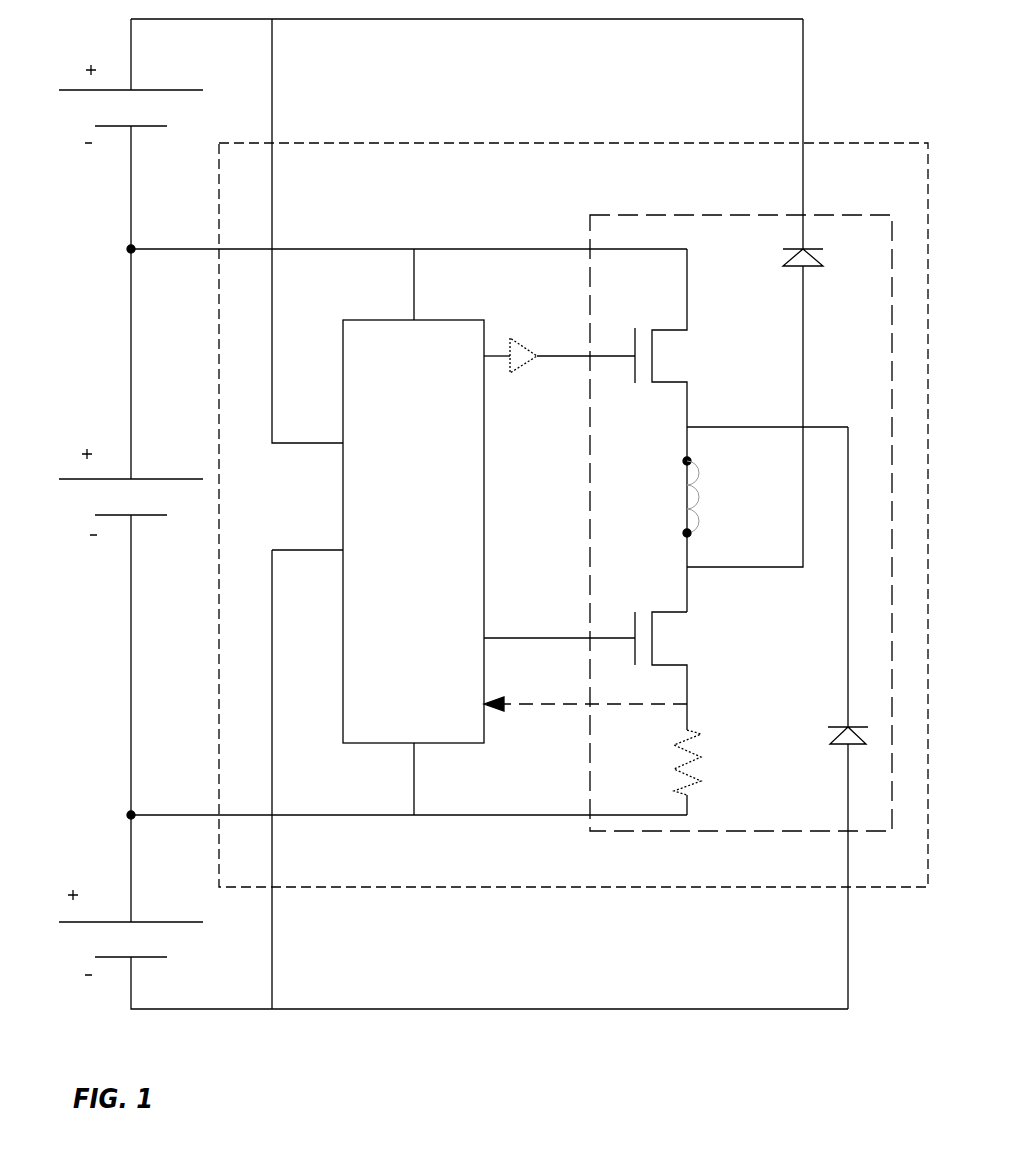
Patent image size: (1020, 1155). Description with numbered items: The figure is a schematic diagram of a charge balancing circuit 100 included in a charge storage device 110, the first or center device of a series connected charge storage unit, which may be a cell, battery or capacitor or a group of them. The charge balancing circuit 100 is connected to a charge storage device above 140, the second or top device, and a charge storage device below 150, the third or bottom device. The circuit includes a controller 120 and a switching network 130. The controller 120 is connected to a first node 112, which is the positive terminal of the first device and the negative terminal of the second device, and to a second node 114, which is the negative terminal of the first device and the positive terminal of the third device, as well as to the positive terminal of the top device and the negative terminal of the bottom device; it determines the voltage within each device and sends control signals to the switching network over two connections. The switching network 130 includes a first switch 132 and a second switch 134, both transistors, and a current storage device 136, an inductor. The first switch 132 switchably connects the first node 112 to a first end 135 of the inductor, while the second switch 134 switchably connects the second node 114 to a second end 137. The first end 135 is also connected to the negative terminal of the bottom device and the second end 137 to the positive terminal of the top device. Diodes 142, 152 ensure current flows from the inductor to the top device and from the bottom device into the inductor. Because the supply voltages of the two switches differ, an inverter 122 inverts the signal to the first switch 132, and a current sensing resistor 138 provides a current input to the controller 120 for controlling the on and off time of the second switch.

The charge balancing circuit 100 is at (423, 142).
The charge storage device 110 is at (168, 477).
The first node 112 is at (129, 249).
The second node 114 is at (131, 815).
The controller 120 is at (452, 318).
The inverter 122 is at (520, 340).
The switching network 130 is at (670, 215).
The first switch 132 is at (645, 335).
The second switch 134 is at (646, 609).
The first end 135 is at (687, 461).
The current storage device 136 is at (706, 492).
The second end 137 is at (690, 538).
The current sensing resistor 138 is at (677, 742).
The charge storage device above 140 is at (168, 90).
The diode 142 is at (818, 258).
The charge storage device below 150 is at (172, 918).
The diode 152 is at (828, 728).